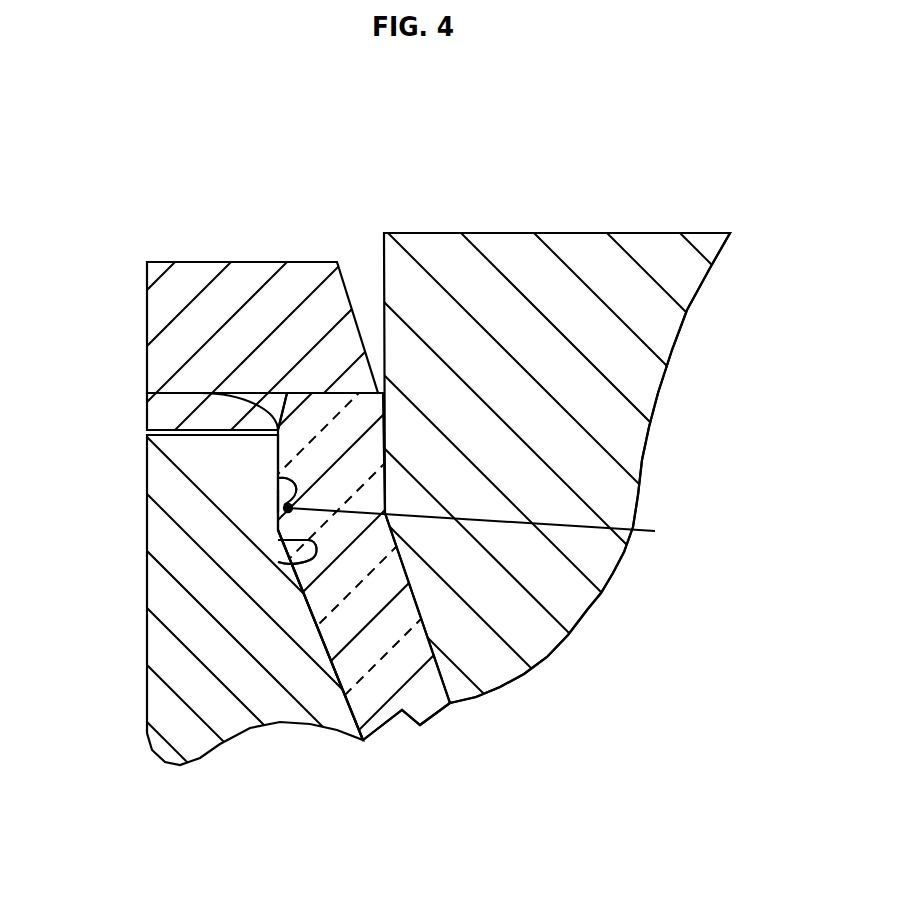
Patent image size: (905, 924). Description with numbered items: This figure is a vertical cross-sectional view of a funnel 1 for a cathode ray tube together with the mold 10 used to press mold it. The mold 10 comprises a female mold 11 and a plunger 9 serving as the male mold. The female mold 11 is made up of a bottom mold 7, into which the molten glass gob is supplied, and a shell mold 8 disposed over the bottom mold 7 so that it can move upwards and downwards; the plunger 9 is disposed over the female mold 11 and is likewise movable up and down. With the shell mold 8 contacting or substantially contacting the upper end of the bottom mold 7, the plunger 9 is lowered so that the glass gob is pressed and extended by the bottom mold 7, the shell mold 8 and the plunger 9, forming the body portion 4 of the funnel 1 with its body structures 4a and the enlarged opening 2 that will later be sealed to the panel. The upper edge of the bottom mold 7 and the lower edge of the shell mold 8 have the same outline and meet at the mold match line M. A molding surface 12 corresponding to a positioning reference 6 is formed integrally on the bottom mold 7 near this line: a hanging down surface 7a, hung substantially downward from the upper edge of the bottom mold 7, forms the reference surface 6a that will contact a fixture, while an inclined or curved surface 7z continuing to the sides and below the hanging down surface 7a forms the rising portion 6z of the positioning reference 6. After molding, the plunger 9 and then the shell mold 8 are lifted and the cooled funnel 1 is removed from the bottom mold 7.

The funnel 1 is at (399, 716).
The enlarged opening 2 is at (338, 392).
The body portion 4 is at (320, 673).
The body structure 4a is at (313, 612).
The positioning reference 6 is at (280, 530).
The reference surface 6a is at (283, 475).
The rising portion 6z is at (288, 566).
The bottom mold 7 is at (177, 720).
The hanging down surface 7a is at (280, 497).
The inclined surface 7z is at (305, 561).
The shell mold 8 is at (160, 315).
The plunger 9 is at (603, 400).
The mold 10 is at (557, 405).
The female mold 11 is at (138, 440).
The molding surface 12 is at (491, 526).
The mold match line M is at (200, 393).